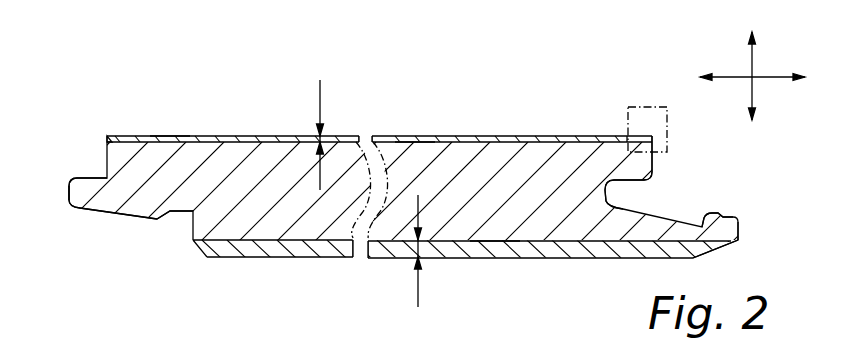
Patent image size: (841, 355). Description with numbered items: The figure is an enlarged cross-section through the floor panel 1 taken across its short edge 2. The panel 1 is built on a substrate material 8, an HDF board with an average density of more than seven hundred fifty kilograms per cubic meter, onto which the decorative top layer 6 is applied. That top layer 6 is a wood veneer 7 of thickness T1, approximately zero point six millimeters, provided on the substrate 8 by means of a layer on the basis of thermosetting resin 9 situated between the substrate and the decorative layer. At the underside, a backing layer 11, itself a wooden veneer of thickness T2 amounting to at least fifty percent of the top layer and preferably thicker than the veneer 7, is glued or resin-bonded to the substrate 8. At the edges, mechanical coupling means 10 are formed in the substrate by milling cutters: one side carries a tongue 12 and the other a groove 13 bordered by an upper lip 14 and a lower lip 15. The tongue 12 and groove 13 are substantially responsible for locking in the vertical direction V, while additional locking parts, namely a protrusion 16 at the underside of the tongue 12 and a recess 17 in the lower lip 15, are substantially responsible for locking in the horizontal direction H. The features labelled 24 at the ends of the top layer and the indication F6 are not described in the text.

The floor panel 1 is at (325, 275).
The short edge 2 is at (66, 177).
The decorative top layer 6 is at (231, 136).
The wood veneer 7 is at (168, 137).
The substrate material 8 is at (498, 210).
The layer on the basis of thermosetting resin 9 is at (414, 141).
The mechanical coupling means 10 is at (115, 253).
The backing layer 11 is at (260, 247).
The tongue 12 is at (103, 222).
The groove 13 is at (698, 180).
The upper lip 14 is at (653, 173).
The lower lip 15 is at (645, 233).
The protrusion 16 is at (152, 221).
The recess 17 is at (703, 221).
The edge of top layer 24 is at (107, 137).
The thickness of the wood veneer T1 is at (321, 80).
The thickness of the backing layer T2 is at (419, 288).
The force F6 is at (635, 107).
The vertical direction V is at (764, 76).
The horizontal direction H is at (760, 86).